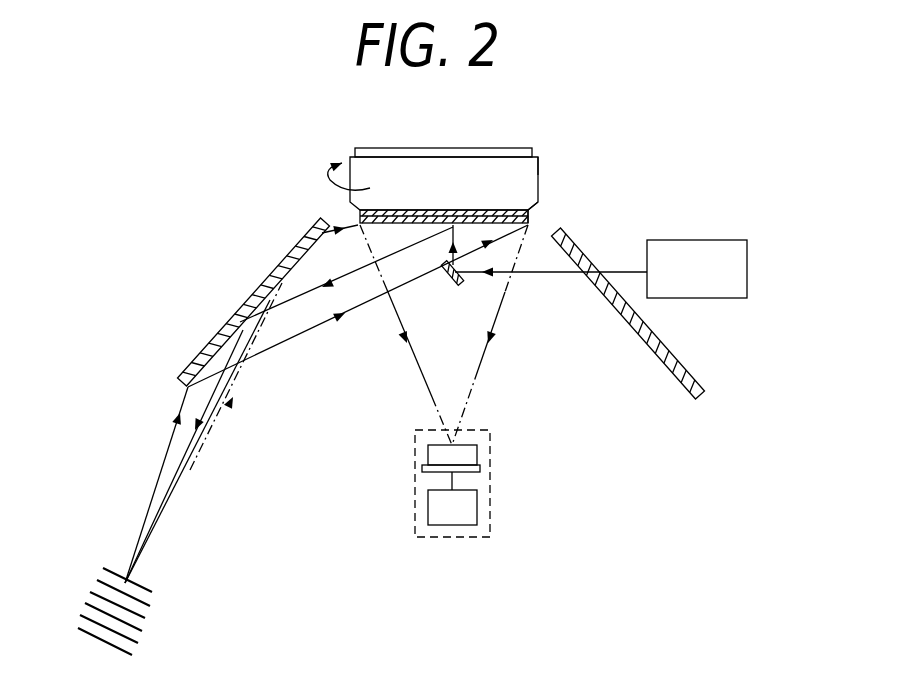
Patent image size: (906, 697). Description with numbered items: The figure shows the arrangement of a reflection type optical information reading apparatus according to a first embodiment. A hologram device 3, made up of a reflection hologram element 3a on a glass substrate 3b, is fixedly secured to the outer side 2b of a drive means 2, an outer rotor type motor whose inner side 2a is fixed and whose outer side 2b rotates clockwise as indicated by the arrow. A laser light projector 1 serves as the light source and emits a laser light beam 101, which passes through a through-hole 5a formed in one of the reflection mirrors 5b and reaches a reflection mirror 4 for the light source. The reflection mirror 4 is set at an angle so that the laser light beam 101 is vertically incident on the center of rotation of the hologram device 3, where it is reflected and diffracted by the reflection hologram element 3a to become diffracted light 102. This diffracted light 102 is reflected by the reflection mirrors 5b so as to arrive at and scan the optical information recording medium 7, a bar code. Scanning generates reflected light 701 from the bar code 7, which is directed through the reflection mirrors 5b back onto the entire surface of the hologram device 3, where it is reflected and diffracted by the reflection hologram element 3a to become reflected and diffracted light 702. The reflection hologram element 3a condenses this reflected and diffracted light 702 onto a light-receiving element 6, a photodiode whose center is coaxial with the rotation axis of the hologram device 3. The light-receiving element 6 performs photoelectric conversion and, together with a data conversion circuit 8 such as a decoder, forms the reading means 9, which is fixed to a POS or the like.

The laser light projector 1 is at (748, 262).
The drive means 2 is at (475, 148).
The inner side 2a is at (367, 142).
The outer side 2b is at (538, 160).
The hologram device 3 is at (492, 210).
The reflection hologram element 3a is at (532, 216).
The substrate 3b is at (540, 205).
The reflection mirror for the light source 4 is at (447, 282).
The through-hole 5a is at (598, 262).
The reflection mirrors 5b is at (244, 318).
The light-receiving element 6 is at (480, 468).
The optical information recording medium 7 is at (150, 612).
The data conversion circuit 8 is at (477, 508).
The reading means 9 is at (455, 537).
The laser light beam 101 is at (617, 275).
The diffracted light 102 is at (352, 275).
The reflected light 701 is at (176, 412).
The reflected and diffracted light 702 is at (436, 417).